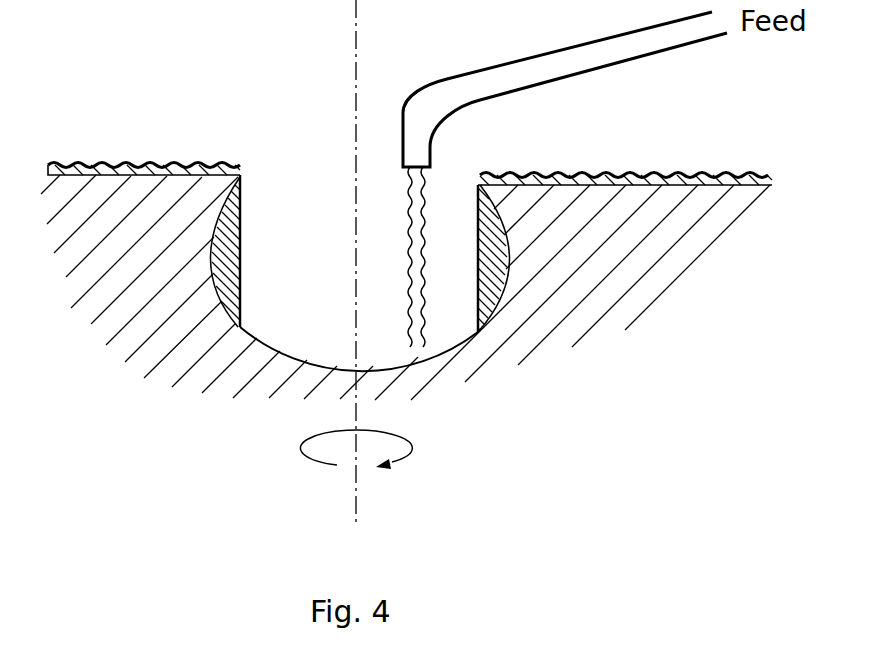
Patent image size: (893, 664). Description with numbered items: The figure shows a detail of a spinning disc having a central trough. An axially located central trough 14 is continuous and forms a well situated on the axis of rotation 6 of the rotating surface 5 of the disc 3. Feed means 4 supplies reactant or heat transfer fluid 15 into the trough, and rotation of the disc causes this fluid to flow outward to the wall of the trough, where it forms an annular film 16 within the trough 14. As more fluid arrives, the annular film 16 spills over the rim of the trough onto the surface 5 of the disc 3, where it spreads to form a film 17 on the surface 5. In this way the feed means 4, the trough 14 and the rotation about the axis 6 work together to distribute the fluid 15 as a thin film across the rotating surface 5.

The disc 3 is at (652, 330).
The feed means 4 is at (556, 80).
The rotating surface 5 is at (140, 235).
The axis of rotation 6 is at (353, 465).
The central trough 14 is at (323, 313).
The reactant or heat transfer fluid 15 is at (453, 213).
The annular film 16 is at (240, 243).
The film 17 is at (140, 235).